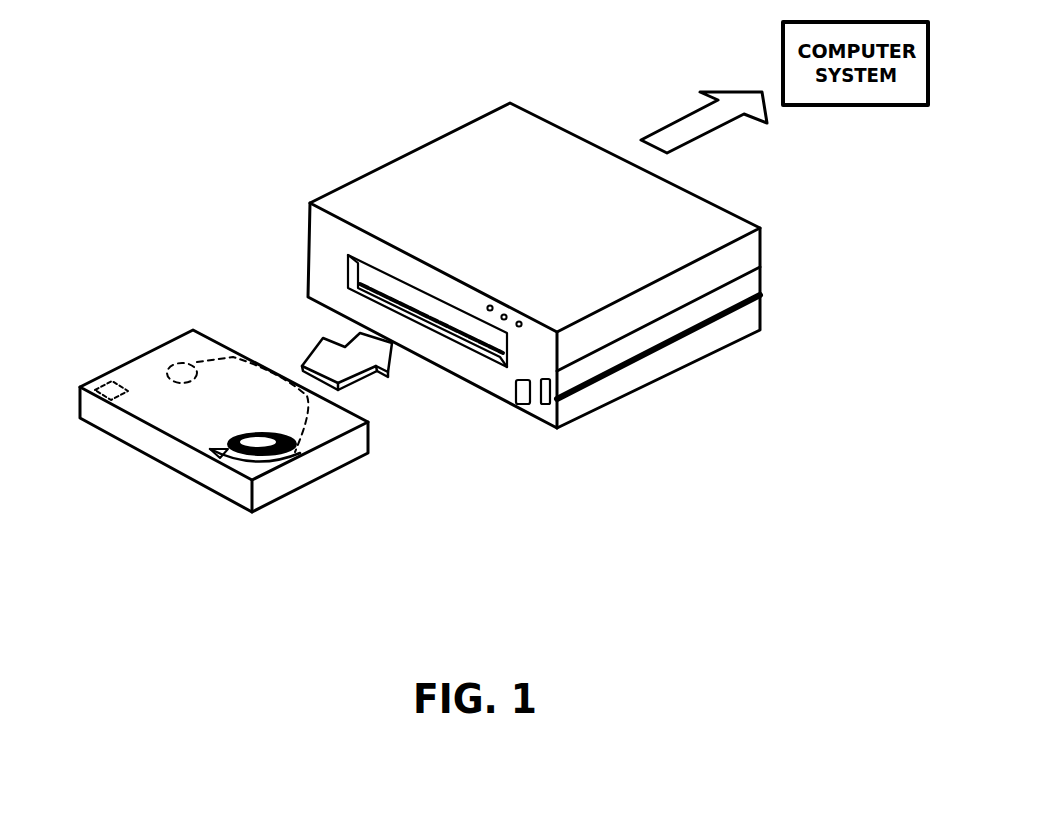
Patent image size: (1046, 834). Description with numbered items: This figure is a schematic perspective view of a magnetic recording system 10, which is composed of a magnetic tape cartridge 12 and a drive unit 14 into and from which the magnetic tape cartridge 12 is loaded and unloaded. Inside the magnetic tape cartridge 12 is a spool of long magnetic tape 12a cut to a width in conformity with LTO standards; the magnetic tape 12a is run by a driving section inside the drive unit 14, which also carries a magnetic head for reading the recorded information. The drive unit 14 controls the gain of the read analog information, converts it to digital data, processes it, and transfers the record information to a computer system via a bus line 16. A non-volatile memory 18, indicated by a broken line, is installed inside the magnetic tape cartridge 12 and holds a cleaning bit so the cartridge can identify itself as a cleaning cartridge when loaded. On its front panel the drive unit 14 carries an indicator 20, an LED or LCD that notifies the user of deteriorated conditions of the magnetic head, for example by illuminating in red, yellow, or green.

The magnetic recording system 10 is at (313, 130).
The magnetic tape cartridge 12 is at (165, 353).
The magnetic tape 12a is at (233, 453).
The drive unit 14 is at (487, 130).
The bus line 16 is at (702, 128).
The non-volatile memory 18 is at (110, 383).
The indicator 20 is at (506, 313).